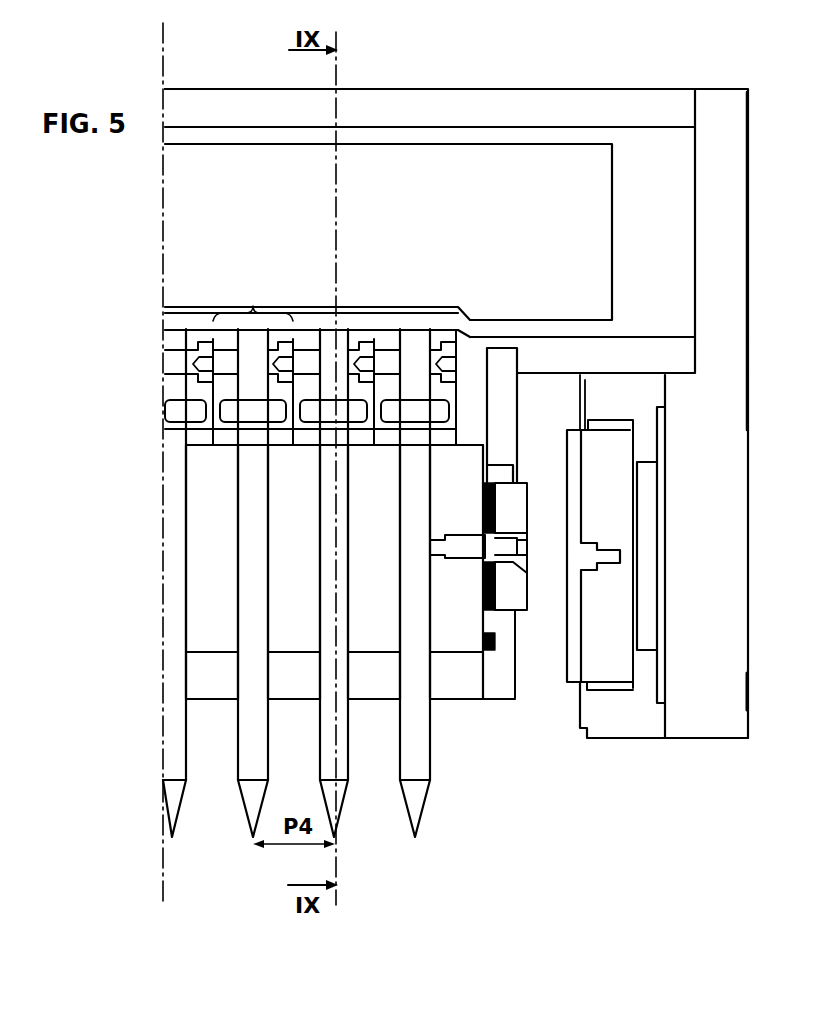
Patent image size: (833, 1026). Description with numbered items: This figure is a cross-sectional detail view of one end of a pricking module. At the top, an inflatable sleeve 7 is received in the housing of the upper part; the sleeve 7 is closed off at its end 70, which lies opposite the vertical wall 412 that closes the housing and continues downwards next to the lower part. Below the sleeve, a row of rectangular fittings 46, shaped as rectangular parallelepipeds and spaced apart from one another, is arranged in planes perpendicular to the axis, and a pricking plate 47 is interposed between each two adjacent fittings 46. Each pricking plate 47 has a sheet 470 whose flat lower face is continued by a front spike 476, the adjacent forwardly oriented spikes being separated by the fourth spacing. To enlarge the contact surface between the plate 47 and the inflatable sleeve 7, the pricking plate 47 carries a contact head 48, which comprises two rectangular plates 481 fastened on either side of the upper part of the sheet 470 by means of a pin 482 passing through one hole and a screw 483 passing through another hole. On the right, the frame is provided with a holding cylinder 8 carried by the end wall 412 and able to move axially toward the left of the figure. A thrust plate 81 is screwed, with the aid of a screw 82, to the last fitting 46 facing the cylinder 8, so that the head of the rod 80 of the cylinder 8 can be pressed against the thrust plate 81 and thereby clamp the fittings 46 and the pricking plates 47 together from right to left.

The inflatable sleeve 7 is at (196, 216).
The holding cylinder 8 is at (628, 766).
The rectangular fitting 46 is at (210, 583).
The pricking plate 47 is at (172, 500).
The contact head 48 is at (253, 306).
The closed end of inflatable sleeve 70 is at (622, 231).
The rod of the cylinder 80 is at (600, 634).
The thrust plate 81 is at (507, 503).
The screw 82 is at (498, 548).
The vertical wall 412 is at (723, 243).
The sheet 470 is at (228, 528).
The front spike 476 is at (253, 802).
The rectangular plate 481 is at (228, 385).
The pin 482 is at (256, 420).
The screw 483 is at (257, 360).